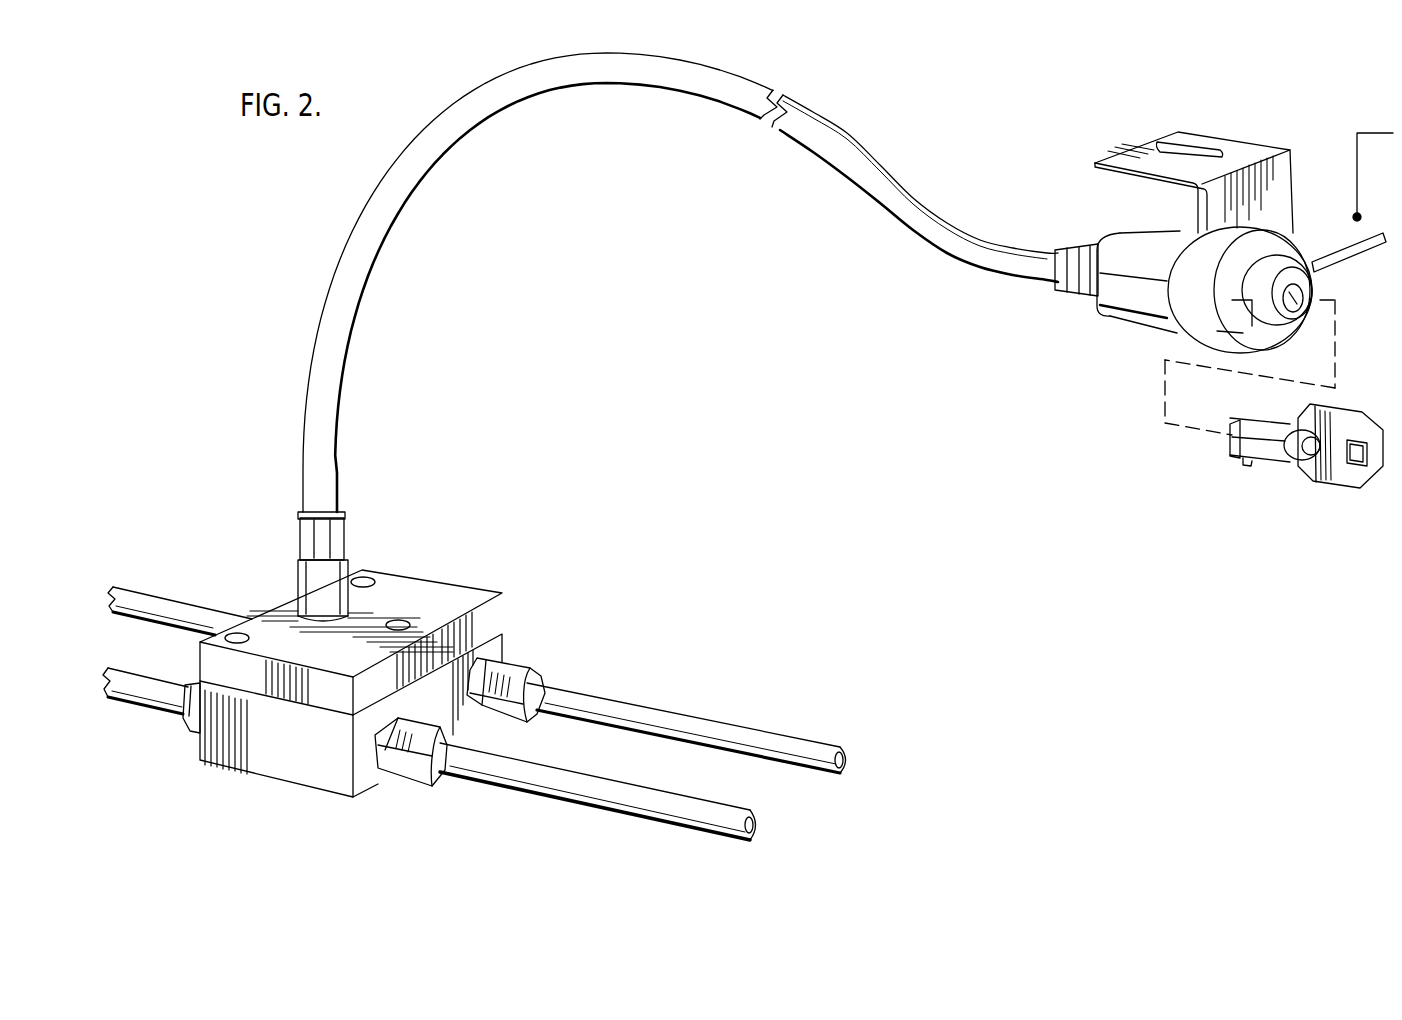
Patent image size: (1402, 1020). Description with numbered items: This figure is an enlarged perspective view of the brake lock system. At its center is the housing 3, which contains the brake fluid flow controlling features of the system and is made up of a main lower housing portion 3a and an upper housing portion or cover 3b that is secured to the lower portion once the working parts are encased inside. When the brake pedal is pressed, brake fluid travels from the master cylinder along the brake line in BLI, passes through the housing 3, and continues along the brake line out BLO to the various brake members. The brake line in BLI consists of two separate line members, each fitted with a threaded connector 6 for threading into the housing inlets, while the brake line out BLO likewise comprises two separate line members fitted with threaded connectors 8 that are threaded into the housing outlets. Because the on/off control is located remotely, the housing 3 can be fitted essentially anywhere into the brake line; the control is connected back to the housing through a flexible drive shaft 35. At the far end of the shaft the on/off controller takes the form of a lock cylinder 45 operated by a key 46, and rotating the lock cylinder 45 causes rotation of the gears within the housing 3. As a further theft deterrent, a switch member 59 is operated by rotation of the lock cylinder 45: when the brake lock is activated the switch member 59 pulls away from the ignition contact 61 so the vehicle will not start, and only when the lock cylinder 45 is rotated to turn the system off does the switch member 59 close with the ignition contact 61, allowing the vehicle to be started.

The housing 3 is at (397, 664).
The main lower housing portion 3a is at (500, 614).
The upper housing portion or cover 3b is at (252, 765).
The threaded connector 6 is at (188, 724).
The threaded connectors 8 is at (517, 664).
The flexible drive shaft 35 is at (897, 178).
The lock cylinder 45 is at (1312, 322).
The key 46 is at (1355, 484).
The switch member 59 is at (1356, 254).
The ignition contact 61 is at (1353, 217).
The brake line in BLI is at (150, 598).
The brake line out BLO is at (737, 723).